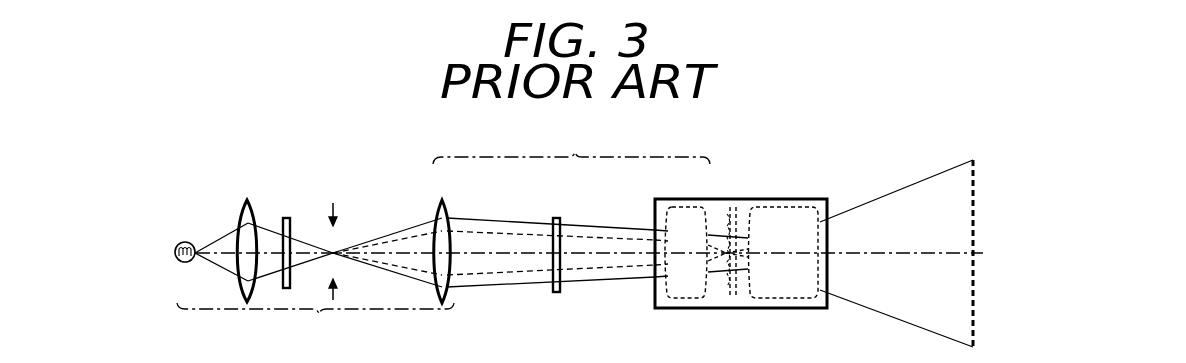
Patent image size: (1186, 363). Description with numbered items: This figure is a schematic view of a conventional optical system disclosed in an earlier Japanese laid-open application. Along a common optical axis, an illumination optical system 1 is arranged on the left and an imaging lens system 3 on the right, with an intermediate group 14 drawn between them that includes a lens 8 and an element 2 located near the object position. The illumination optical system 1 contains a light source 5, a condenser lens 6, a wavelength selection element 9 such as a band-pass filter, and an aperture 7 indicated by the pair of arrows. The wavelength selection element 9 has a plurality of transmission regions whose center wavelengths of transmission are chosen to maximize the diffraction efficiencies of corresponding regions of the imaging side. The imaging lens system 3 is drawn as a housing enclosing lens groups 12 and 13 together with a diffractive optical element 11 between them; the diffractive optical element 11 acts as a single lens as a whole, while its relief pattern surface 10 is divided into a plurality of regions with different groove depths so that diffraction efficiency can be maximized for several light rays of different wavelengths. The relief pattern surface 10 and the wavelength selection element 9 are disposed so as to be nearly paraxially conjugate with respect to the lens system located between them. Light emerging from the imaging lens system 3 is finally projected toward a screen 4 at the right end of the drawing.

The illumination optical system 1 is at (315, 323).
The light valve / liquid crystal panel 2 is at (561, 218).
The imaging lens system 3 is at (739, 309).
The screen 4 is at (971, 313).
The light source lamp 5 is at (191, 243).
The condenser lens 6 is at (252, 205).
The aperture stop 7 is at (336, 209).
The collimator lens 8 is at (446, 200).
The wavelength selection element 9 is at (291, 220).
The relief pattern surface 10 is at (728, 287).
The diffractive optical element 11 is at (735, 207).
The front lens group 12 is at (683, 207).
The rear lens group 13 is at (786, 207).
The imaging optical unit 14 is at (571, 148).